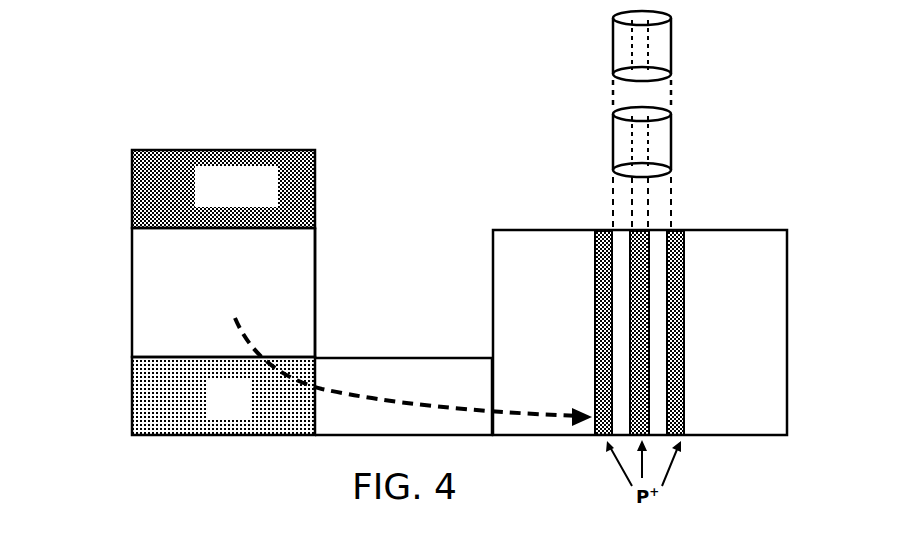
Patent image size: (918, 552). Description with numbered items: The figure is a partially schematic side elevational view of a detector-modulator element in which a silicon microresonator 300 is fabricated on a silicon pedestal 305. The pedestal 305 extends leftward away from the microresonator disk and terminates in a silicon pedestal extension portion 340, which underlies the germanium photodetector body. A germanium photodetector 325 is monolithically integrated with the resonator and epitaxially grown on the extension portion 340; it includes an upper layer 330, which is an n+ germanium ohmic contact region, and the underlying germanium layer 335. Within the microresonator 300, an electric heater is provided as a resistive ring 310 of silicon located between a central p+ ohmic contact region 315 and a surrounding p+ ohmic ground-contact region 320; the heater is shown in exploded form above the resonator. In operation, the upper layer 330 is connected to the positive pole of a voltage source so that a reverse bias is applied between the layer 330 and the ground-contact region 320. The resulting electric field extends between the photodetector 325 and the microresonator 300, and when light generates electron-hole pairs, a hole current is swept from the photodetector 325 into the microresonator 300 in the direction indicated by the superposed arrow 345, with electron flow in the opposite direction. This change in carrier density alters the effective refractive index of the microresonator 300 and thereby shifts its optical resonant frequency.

The silicon microresonator 300 is at (788, 296).
The silicon pedestal 305 is at (455, 358).
The resistive ring 310 is at (677, 45).
The p+ ohmic contact region 315 is at (668, 238).
The p+ ohmic ground-contact region 320 is at (686, 290).
The germanium photodetector 325 is at (118, 246).
The upper layer 330 is at (318, 183).
The germanium layer 335 is at (318, 277).
The silicon pedestal extension portion 340 is at (128, 400).
The arrow 345 is at (235, 325).